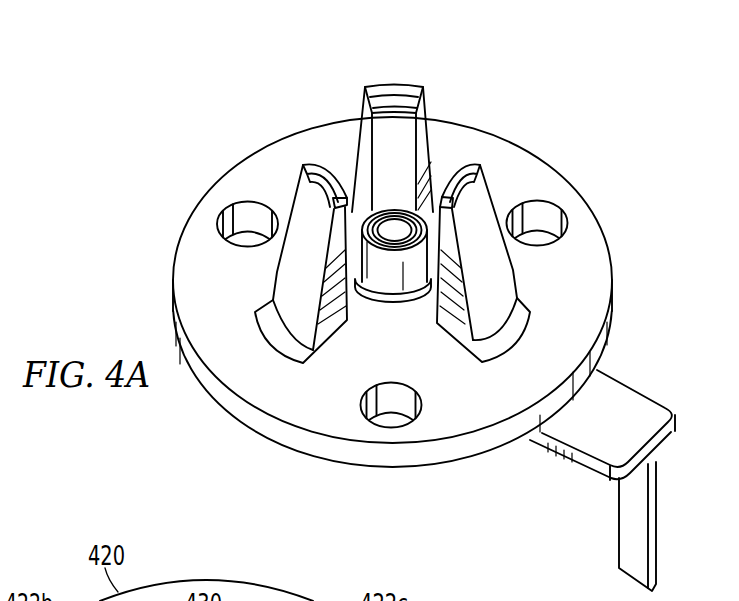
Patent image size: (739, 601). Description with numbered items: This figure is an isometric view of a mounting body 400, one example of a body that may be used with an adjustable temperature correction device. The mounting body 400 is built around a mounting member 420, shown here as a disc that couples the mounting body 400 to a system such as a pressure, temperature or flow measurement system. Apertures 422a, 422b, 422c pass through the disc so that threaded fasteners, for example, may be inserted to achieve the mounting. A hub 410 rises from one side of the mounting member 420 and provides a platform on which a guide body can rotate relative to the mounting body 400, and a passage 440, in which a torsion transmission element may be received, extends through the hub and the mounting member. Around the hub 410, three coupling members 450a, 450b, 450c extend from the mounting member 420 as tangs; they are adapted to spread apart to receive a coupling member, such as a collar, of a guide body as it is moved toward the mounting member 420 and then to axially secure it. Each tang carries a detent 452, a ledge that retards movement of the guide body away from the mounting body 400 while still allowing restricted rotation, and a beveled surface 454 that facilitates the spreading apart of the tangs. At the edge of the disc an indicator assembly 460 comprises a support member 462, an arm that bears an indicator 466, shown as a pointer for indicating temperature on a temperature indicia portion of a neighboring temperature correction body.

The mounting body 400 is at (141, 195).
The hub 410 is at (383, 293).
The mounting member 420 is at (240, 436).
The aperture 422a is at (400, 383).
The aperture 422b is at (248, 220).
The aperture 422c is at (548, 212).
The passage 440 is at (395, 228).
The coupling member 450a is at (369, 76).
The coupling member 450b is at (515, 266).
The coupling member 450c is at (273, 268).
The detent 452 is at (420, 86).
The beveled surface 454 is at (396, 100).
The indicator assembly 460 is at (640, 377).
The support member 462 is at (594, 477).
The indicator 466 is at (660, 533).